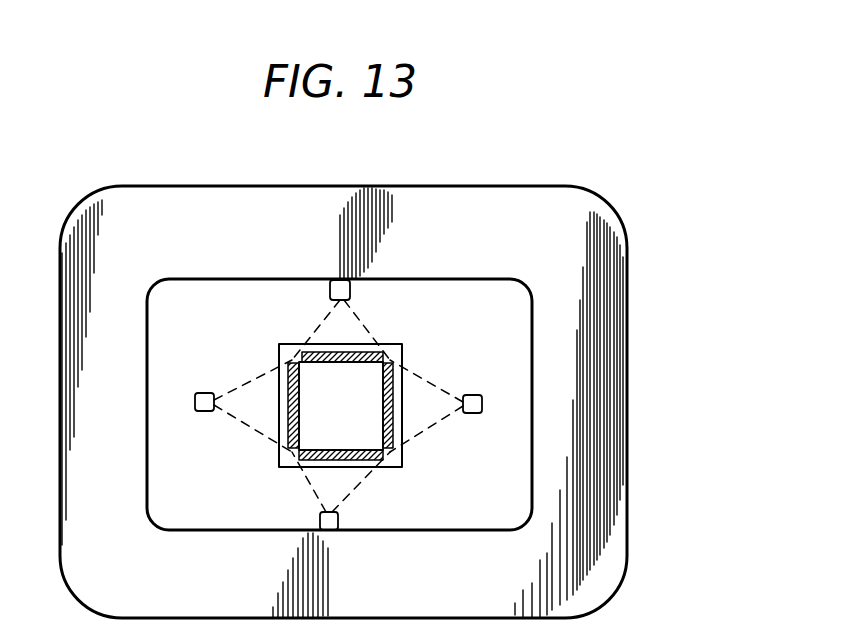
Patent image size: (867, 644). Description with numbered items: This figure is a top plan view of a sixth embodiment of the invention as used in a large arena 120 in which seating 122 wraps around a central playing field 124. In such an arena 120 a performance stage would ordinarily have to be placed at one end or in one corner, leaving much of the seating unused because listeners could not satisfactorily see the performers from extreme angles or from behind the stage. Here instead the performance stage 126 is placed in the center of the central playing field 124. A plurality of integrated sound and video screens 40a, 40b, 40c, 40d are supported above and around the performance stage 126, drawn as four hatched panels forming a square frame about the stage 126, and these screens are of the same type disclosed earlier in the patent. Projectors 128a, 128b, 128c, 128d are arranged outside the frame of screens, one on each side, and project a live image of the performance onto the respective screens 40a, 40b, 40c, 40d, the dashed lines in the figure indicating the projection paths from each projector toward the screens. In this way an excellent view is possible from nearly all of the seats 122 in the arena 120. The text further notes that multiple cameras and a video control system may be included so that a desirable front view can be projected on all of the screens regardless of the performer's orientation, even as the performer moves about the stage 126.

The arena 120 is at (633, 247).
The seating 122 is at (571, 322).
The central playing field 124 is at (478, 358).
The performance stage 126 is at (356, 418).
The integrated sound and video screen 40a is at (360, 352).
The integrated sound and video screen 40b is at (394, 424).
The integrated sound and video screen 40c is at (313, 460).
The integrated sound and video screen 40d is at (291, 363).
The projector 128a is at (350, 289).
The projector 128b is at (473, 413).
The projector 128c is at (333, 531).
The projector 128d is at (205, 413).